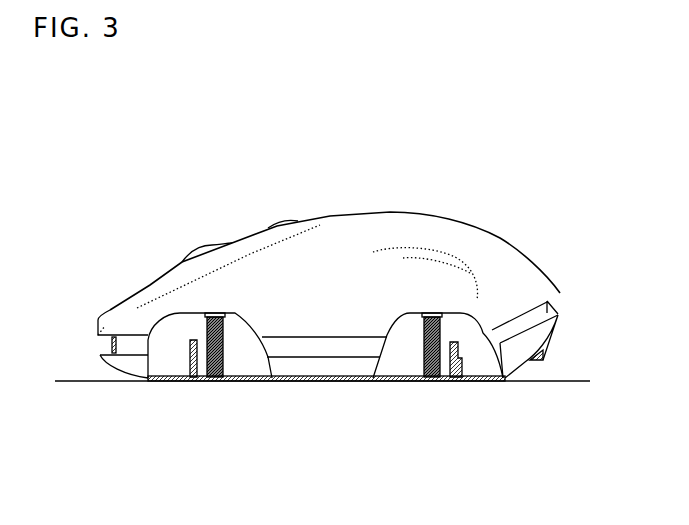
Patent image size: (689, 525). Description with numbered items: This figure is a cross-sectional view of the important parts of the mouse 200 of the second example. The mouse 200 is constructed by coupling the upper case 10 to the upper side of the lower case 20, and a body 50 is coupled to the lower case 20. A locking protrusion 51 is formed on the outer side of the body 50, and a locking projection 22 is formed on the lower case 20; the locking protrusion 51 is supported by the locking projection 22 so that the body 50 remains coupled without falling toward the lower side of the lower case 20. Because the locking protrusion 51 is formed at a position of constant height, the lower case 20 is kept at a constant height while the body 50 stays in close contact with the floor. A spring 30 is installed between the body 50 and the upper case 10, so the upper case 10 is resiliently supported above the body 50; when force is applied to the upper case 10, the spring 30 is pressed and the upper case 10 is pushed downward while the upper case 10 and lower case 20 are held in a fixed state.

The mouse 200 is at (335, 190).
The upper case 10 is at (483, 248).
The lower case 20 is at (493, 382).
The locking projection 22 is at (172, 382).
The spring 30 is at (227, 342).
The body 50 is at (385, 382).
The locking protrusion 51 is at (192, 335).